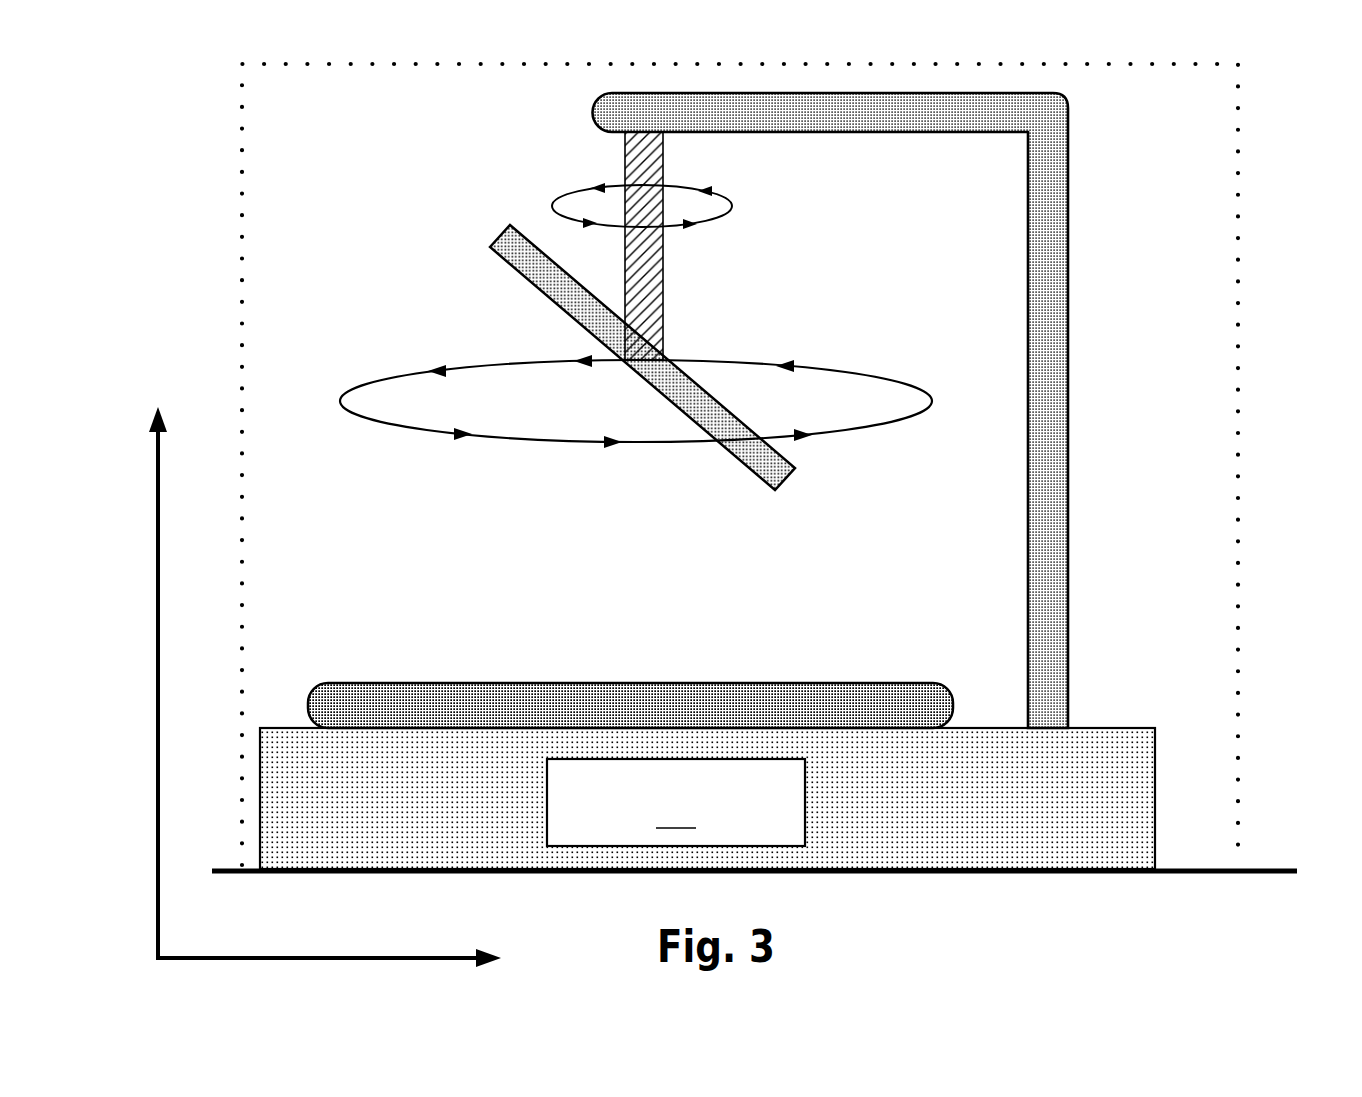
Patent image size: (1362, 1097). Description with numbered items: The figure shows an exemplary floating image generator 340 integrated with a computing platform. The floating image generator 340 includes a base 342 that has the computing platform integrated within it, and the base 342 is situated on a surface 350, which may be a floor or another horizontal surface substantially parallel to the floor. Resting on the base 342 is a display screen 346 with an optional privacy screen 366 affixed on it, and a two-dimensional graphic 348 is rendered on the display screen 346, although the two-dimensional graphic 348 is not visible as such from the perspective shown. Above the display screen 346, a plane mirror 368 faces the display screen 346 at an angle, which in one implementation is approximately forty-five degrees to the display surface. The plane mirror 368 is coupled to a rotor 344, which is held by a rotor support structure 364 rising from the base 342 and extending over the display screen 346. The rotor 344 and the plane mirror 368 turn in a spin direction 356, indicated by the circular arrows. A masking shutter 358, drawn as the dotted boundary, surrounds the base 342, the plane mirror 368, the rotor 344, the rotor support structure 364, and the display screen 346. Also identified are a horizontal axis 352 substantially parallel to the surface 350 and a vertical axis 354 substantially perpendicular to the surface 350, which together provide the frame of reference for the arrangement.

The floating image generator 340 is at (782, 462).
The base 342 is at (1156, 776).
The rotor 344 is at (664, 305).
The display screen 346 is at (323, 682).
The 2D graphic 348 is at (601, 664).
The surface 350 is at (1272, 866).
The horizontal axis 352 is at (325, 956).
The vertical axis 354 is at (156, 601).
The spin direction 356 is at (731, 206).
The masking shutter 358 is at (1240, 327).
The rotor support structure 364 is at (1069, 393).
The privacy screen 366 is at (439, 664).
The plane mirror 368 is at (637, 374).